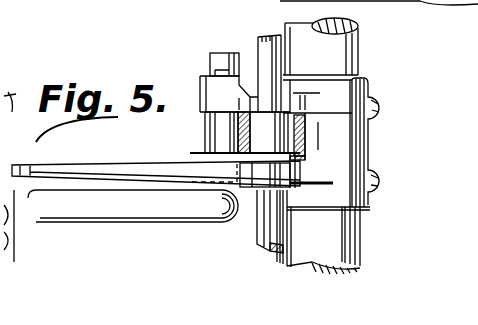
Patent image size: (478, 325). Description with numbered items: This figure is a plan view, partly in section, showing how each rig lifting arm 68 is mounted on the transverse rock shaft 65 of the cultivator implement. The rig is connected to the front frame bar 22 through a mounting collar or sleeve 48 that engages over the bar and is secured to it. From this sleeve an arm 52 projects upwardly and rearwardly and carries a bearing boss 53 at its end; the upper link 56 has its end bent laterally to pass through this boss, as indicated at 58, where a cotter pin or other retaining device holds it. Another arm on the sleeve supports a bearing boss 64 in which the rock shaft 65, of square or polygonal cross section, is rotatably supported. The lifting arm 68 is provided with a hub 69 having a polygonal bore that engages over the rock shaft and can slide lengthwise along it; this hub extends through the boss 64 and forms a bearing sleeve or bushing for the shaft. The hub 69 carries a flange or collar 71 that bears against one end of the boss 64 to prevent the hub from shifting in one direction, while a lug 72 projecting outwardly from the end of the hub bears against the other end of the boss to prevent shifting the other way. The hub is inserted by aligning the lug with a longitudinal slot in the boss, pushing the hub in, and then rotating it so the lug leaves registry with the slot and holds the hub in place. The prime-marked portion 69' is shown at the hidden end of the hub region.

The arm 52 is at (302, 103).
The bent end of upper link 58 is at (212, 65).
The bearing boss 53 is at (210, 118).
The lug 72 is at (307, 115).
The bearing boss 64 is at (306, 128).
The mounting collar or sleeve 48 is at (366, 130).
The hub 69 is at (363, 143).
The flange or collar 71 is at (292, 166).
The front frame bar 22 is at (362, 265).
The rig lifting arm 68 is at (126, 163).
The hidden end 69' is at (241, 199).
The upper link 56 is at (43, 212).
The transverse rock shaft 65 is at (257, 231).